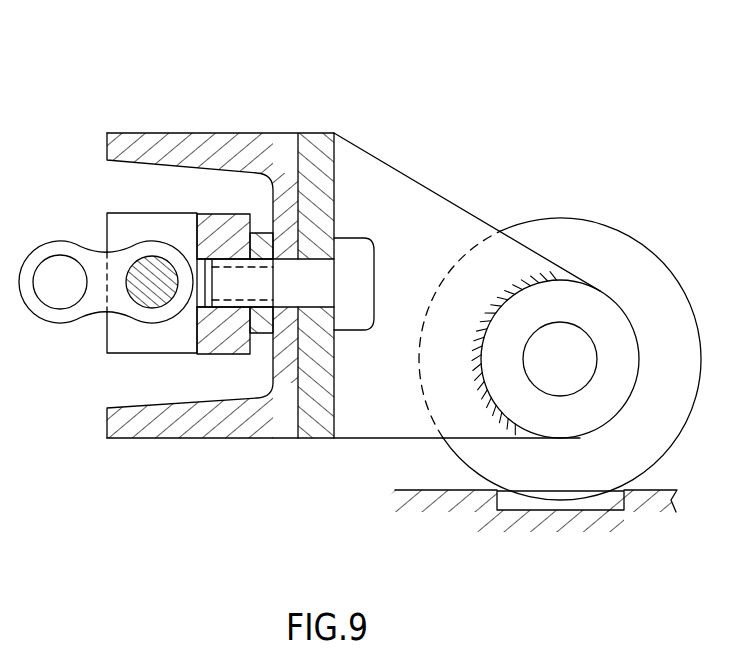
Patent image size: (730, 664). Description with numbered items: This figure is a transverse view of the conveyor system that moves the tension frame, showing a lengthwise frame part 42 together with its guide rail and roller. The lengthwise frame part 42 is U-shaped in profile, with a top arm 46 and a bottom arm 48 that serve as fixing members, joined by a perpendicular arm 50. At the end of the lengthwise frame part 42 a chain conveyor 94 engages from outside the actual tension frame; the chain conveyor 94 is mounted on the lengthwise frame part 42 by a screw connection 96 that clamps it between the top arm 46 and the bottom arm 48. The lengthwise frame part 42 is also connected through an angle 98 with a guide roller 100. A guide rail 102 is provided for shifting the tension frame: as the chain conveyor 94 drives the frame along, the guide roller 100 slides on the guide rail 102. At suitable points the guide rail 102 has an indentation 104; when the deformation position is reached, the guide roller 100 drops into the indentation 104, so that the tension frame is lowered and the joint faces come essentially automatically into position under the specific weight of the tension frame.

The lengthwise frame part 42 is at (262, 127).
The top arm 46 is at (140, 132).
The bottom arm 48 is at (188, 440).
The perpendicular arm 50 is at (287, 348).
The chain conveyor 94 is at (52, 240).
The screw connection 96 is at (355, 238).
The angle 98 is at (428, 188).
The guide roller 100 is at (624, 233).
The guide rail 102 is at (408, 490).
The indentation 104 is at (598, 512).